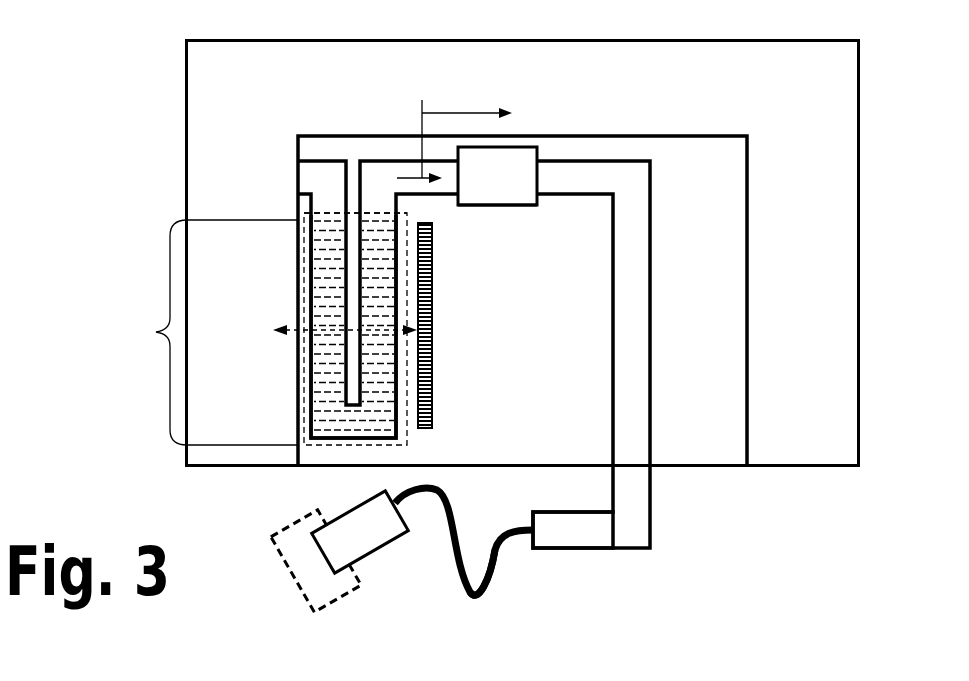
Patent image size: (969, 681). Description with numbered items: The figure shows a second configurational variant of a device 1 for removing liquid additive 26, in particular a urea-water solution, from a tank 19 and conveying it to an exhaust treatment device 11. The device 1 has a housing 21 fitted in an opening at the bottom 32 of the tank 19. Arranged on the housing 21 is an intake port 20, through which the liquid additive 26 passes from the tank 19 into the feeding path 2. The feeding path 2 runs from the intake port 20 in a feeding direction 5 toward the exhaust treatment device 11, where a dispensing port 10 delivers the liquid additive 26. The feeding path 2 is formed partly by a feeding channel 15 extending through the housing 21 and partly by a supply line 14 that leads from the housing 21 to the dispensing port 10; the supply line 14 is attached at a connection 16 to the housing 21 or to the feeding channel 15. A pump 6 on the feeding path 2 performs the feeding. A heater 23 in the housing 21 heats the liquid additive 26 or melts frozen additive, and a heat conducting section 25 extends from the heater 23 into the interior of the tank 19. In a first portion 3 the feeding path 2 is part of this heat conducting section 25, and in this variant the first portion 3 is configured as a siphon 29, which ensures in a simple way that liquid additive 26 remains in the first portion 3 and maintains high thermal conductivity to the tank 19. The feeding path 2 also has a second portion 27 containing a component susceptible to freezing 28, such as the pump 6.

The device 1 is at (177, 42).
The feeding path 2 is at (650, 405).
The first portion 3 is at (153, 332).
The feeding direction 5 is at (413, 177).
The pump 6 is at (520, 205).
The dispensing port 10 is at (355, 563).
The exhaust treatment device 11 is at (330, 603).
The supply line 14 is at (490, 558).
The feeding channel 15 is at (650, 385).
The connection 16 is at (535, 552).
The tank 19 is at (185, 183).
The intake port 20 is at (297, 178).
The housing 21 is at (302, 307).
The heater 23 is at (433, 377).
The heat conducting section 25 is at (290, 337).
The liquid additive 26 is at (333, 417).
The second portion 27 is at (459, 113).
The component susceptible to freezing 28 is at (525, 147).
The siphon 29 is at (319, 212).
The bottom 32 is at (845, 467).